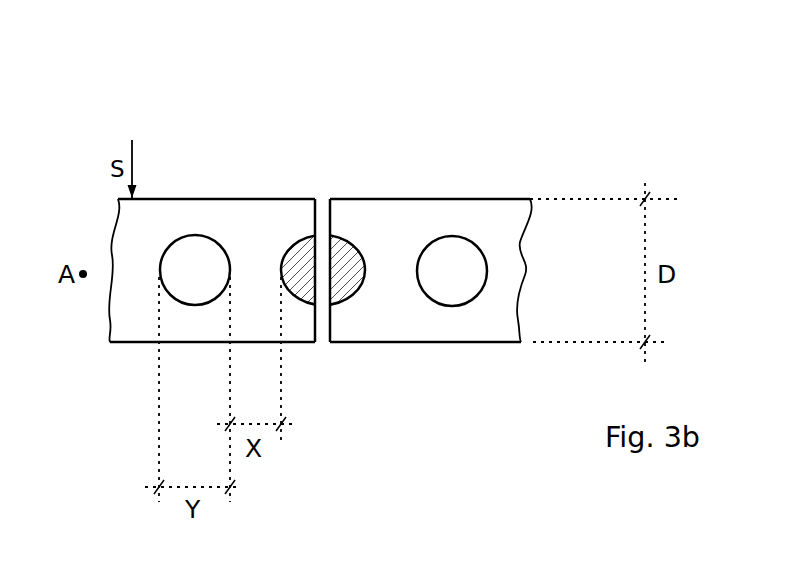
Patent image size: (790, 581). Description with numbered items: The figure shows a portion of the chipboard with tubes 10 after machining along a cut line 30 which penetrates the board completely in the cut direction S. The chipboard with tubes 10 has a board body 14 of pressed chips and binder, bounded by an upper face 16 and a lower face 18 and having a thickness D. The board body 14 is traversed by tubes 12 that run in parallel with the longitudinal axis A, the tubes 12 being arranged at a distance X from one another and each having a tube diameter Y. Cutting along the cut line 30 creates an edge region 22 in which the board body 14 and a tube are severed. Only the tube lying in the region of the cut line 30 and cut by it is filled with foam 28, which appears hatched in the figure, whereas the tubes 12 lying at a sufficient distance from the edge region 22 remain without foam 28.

The chipboard with tubes 10 is at (192, 107).
The tube 12 is at (183, 307).
The board body 14 is at (385, 199).
The upper face 16 is at (453, 198).
The lower face 18 is at (502, 344).
The edge region 22 is at (315, 199).
The foam 28 is at (300, 287).
The cut line 30 is at (320, 197).